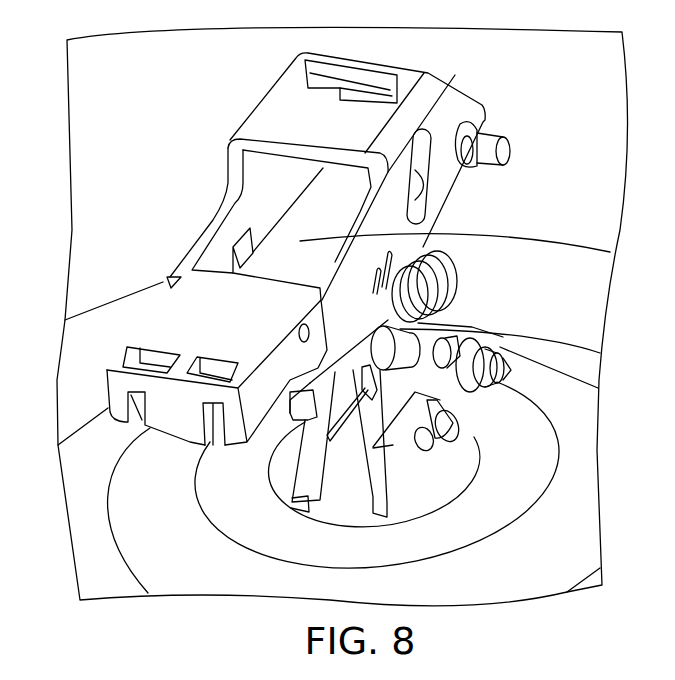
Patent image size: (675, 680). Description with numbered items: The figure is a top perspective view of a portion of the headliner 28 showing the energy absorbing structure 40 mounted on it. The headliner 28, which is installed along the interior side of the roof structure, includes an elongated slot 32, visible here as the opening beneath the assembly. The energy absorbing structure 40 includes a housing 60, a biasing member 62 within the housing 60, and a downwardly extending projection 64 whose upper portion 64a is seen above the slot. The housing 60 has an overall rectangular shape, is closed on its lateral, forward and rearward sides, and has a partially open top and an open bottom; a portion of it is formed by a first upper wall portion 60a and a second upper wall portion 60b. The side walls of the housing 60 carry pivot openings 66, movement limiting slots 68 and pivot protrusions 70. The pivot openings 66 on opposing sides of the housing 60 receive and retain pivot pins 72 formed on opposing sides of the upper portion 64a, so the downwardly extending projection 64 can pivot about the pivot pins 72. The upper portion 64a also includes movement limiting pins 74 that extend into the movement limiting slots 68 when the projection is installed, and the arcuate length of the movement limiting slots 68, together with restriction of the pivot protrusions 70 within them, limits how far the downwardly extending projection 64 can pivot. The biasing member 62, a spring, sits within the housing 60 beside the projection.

The energy absorbing structure 40 is at (316, 306).
The headliner 28 is at (80, 357).
The elongated slot 32 is at (488, 478).
The housing 60 is at (340, 226).
The first upper wall portion 60a is at (287, 118).
The second upper wall portion 60b is at (441, 77).
The biasing member 62 is at (450, 270).
The downwardly extending projection 64 is at (424, 398).
The upper portion 64a is at (450, 393).
The pivot openings 66 is at (480, 124).
The movement limiting slots 68 is at (435, 200).
The pivot protrusions 70 is at (508, 155).
The pivot pins 72 is at (515, 372).
The movement limiting pins 74 is at (458, 432).